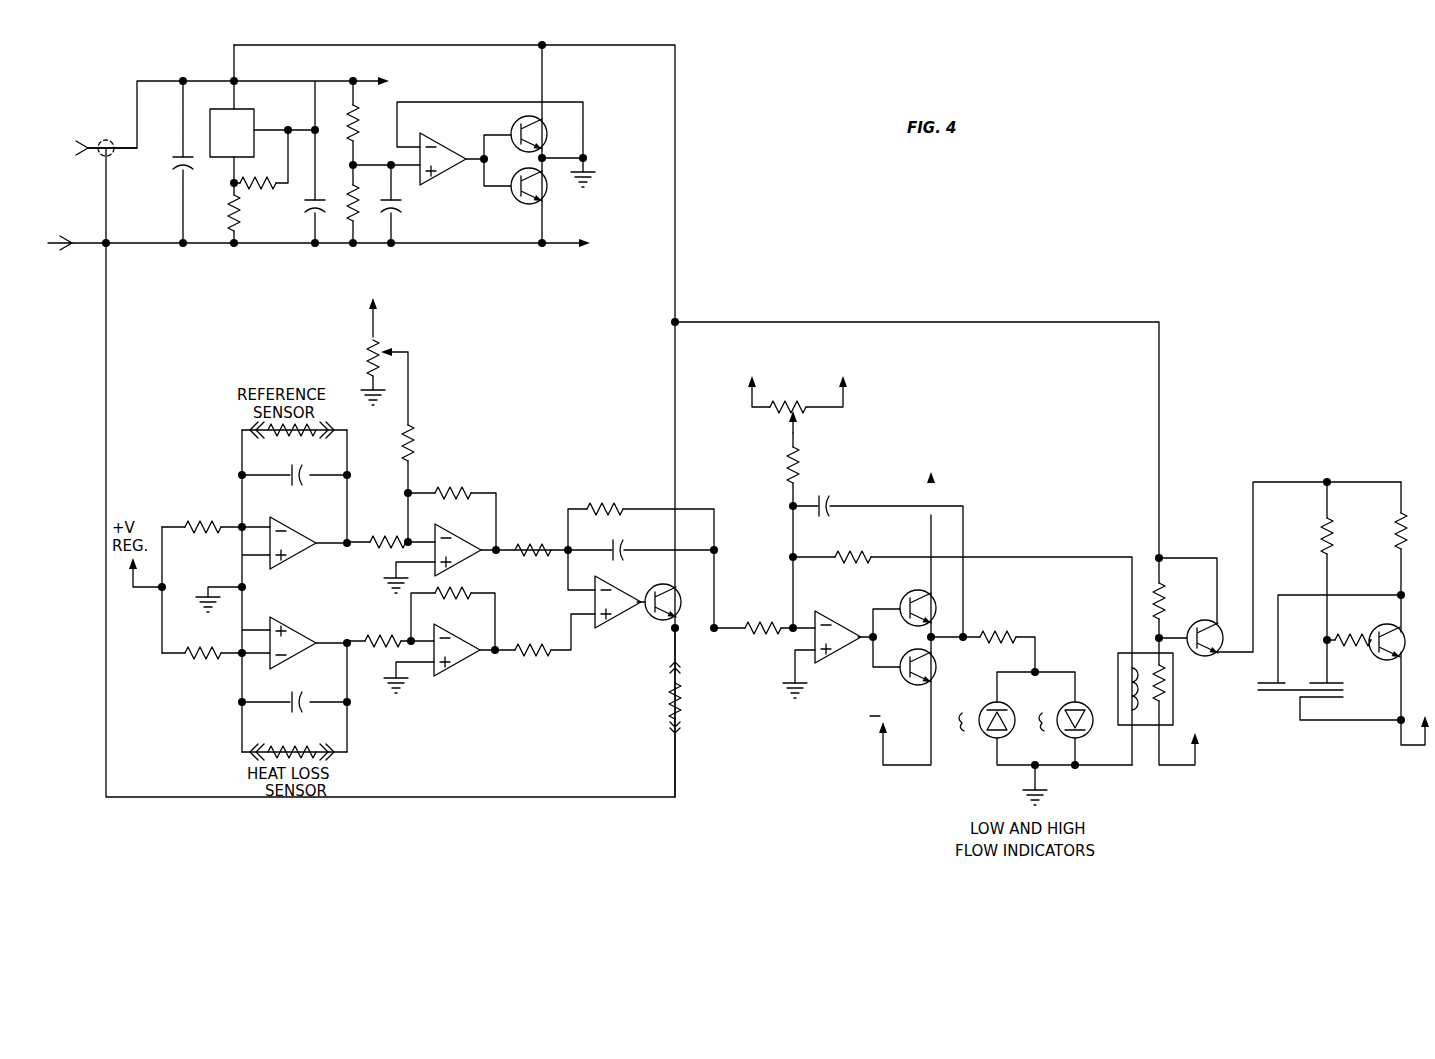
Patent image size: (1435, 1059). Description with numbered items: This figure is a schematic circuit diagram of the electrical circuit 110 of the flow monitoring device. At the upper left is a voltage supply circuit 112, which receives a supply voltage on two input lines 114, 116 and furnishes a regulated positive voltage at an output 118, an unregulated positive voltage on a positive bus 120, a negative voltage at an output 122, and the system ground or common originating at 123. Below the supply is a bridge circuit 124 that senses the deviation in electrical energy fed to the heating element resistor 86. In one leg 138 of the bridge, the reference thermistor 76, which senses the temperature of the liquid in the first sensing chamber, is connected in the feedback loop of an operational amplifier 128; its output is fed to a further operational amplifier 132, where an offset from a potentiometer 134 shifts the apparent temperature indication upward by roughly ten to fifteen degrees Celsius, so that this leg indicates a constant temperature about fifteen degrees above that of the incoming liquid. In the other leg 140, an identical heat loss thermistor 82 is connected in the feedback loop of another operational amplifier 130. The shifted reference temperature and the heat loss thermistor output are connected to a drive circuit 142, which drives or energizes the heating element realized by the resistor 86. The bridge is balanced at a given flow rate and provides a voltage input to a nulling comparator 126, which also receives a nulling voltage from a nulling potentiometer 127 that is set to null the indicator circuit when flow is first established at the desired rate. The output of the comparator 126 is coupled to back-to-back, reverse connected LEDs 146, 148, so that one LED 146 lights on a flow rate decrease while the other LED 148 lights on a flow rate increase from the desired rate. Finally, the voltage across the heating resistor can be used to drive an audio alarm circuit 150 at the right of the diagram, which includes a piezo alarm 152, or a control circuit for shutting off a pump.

The electrical circuit 110 is at (956, 303).
The voltage supply circuit 112 is at (232, 272).
The input line 114 is at (80, 158).
The input line 116 is at (88, 254).
The output 118 is at (358, 81).
The positive bus 120 is at (675, 183).
The output 122 is at (562, 243).
The system ground 123 is at (585, 158).
The bridge circuit 124 is at (475, 466).
The nulling comparator 126 is at (840, 657).
The nulling potentiometer 127 is at (821, 424).
The operational amplifier 128 is at (226, 502).
The operational amplifier 130 is at (233, 686).
The operational amplifier 132 is at (484, 569).
The potentiometer 134 is at (403, 336).
The leg of the bridge circuit 138 is at (339, 570).
The leg of the bridge circuit 140 is at (340, 633).
The drive circuit 142 is at (630, 622).
The LED 146 is at (994, 744).
The LED 148 is at (1098, 692).
The audio alarm circuit 150 is at (1280, 466).
The piezo alarm 152 is at (1343, 630).
The thermistor 76 is at (292, 439).
The thermistor 82 is at (306, 747).
The heating element resistor 86 is at (682, 714).